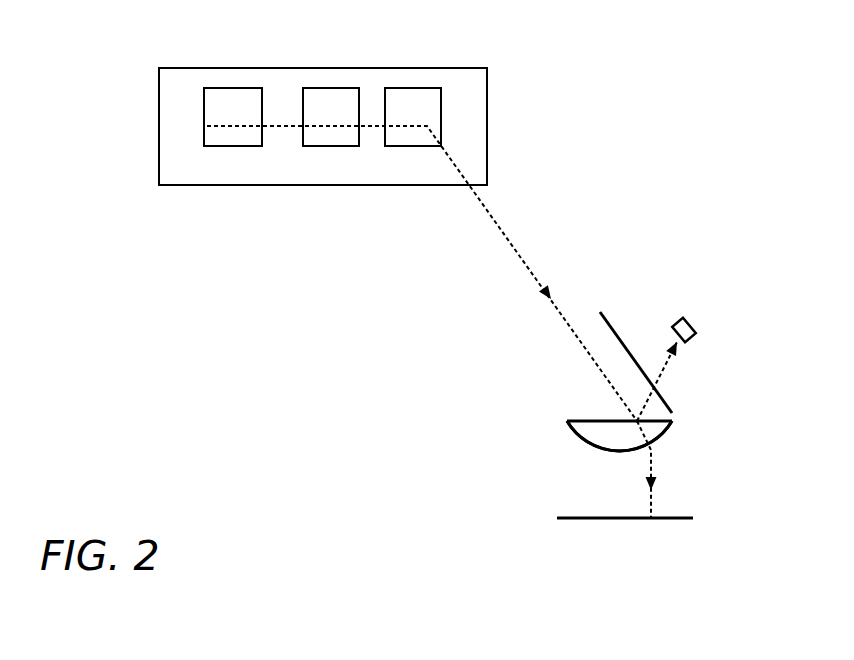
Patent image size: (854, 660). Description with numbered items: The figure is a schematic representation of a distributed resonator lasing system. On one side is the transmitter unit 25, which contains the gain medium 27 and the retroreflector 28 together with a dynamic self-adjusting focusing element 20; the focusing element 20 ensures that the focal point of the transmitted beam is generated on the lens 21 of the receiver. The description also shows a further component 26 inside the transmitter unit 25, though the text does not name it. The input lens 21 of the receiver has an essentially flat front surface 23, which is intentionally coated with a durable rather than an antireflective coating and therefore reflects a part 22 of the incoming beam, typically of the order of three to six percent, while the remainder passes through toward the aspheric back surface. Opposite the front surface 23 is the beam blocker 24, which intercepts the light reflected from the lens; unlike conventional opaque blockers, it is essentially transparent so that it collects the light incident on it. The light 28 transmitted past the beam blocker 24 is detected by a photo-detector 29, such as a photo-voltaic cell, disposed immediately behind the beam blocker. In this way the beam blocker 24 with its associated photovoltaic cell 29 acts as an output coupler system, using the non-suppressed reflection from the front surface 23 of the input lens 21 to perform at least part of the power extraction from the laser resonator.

The dynamic self-adjusting focusing element 20 is at (407, 88).
The input lens 21 is at (672, 423).
The reflected part of the incoming beam 22 is at (643, 402).
The front surface 23 is at (567, 421).
The beam blocker 24 is at (602, 311).
The transmitter unit 25 is at (470, 68).
The light source 26 is at (228, 88).
The gain medium 27 is at (318, 88).
The retroreflector 28 is at (662, 376).
The photo-detector 29 is at (685, 320).